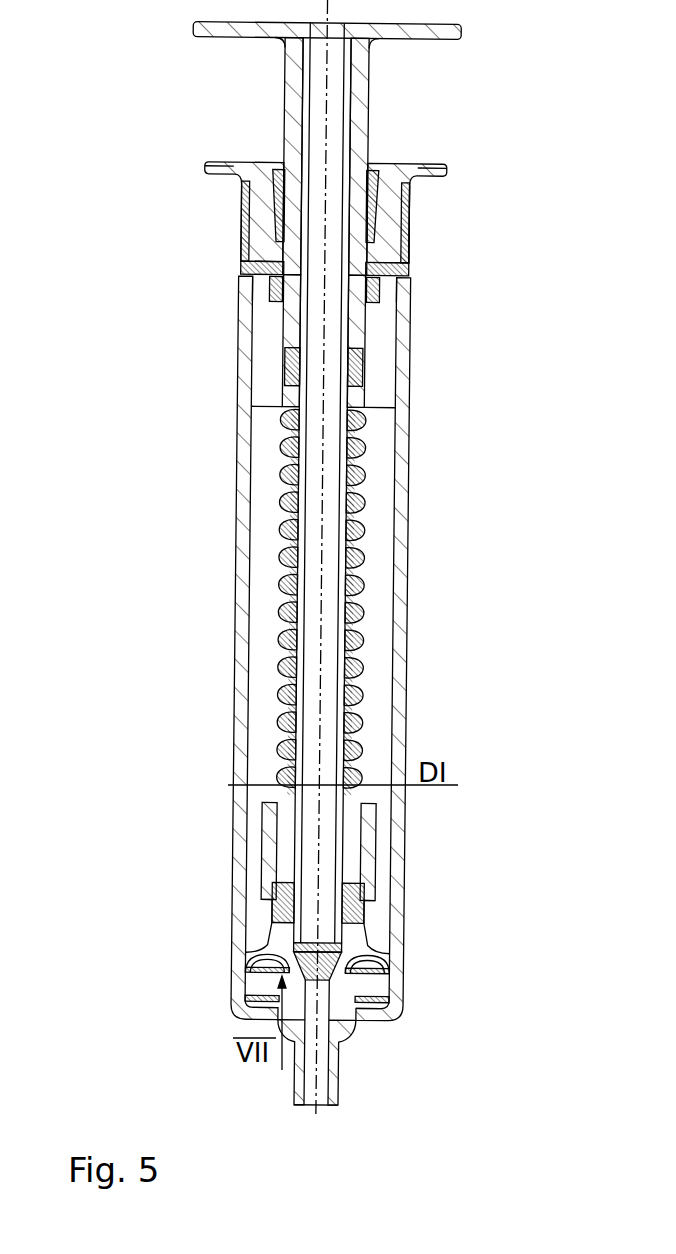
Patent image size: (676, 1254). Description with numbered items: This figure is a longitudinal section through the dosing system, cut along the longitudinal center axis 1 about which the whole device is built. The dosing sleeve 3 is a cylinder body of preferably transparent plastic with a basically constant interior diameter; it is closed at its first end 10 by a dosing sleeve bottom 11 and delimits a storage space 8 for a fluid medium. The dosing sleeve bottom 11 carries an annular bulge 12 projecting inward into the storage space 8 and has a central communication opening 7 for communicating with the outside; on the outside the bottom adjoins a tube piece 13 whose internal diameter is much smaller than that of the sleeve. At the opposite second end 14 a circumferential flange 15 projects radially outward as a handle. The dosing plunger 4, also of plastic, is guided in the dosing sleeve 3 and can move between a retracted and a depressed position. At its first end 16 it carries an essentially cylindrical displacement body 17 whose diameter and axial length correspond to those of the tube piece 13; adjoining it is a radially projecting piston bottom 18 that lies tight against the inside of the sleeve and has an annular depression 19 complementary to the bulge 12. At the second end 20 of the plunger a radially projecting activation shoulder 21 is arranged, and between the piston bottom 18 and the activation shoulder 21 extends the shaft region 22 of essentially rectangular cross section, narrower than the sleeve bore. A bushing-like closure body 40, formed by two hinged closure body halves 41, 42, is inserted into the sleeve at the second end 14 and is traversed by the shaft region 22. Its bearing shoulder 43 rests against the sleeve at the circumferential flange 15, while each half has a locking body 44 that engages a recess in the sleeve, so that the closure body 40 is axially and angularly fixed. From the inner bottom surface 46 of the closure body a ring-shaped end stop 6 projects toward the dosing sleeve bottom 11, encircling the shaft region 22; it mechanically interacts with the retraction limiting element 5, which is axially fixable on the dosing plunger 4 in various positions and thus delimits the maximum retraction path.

The longitudinal center axis 1 is at (322, 103).
The dosing sleeve 3 is at (405, 543).
The dosing plunger 4 is at (366, 645).
The retraction limiting element 5 is at (372, 862).
The end stop 6 is at (381, 292).
The communication opening 7 is at (345, 1035).
The storage space 8 is at (383, 712).
The first end 10 is at (255, 1008).
The dosing sleeve bottom 11 is at (383, 1018).
The annular bulge 12 is at (283, 993).
The tube piece 13 is at (338, 1088).
The second end 14 is at (243, 186).
The circumferential flange 15 is at (415, 181).
The first end 16 is at (300, 1065).
The displacement body 17 is at (340, 985).
The piston bottom 18 is at (248, 960).
The annular depression 19 is at (268, 977).
The second end 20 is at (293, 40).
The activation shoulder 21 is at (196, 31).
The shaft region 22 is at (358, 340).
The closure body 40 is at (236, 242).
The closure body half 41 is at (262, 218).
The closure body half 42 is at (405, 233).
The bearing shoulder 43 is at (248, 166).
The locking body 44 is at (270, 278).
The inner bottom surface 46 is at (265, 290).